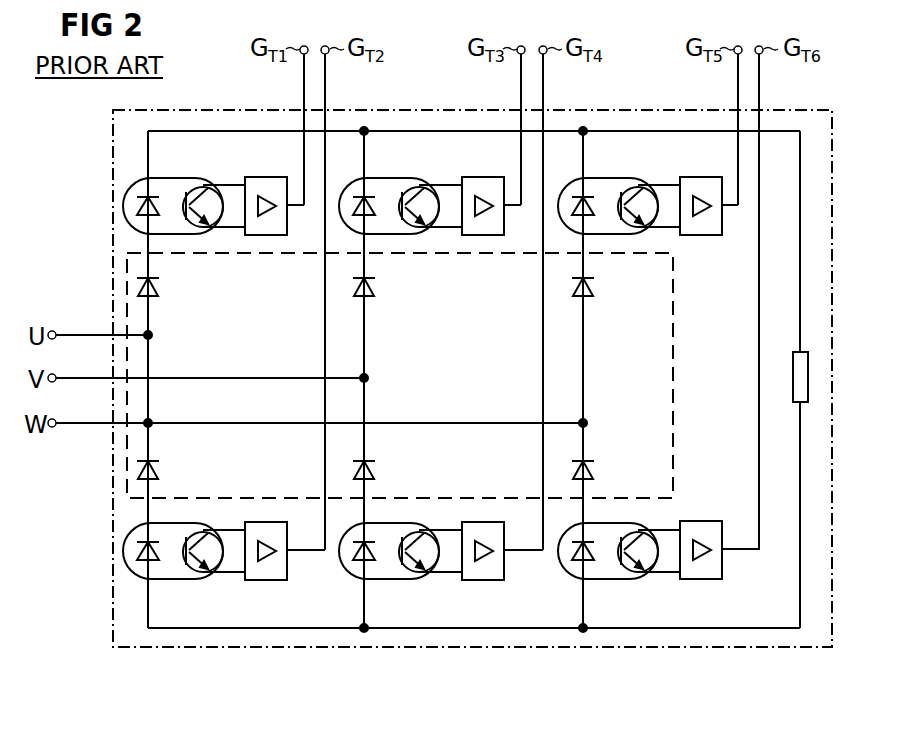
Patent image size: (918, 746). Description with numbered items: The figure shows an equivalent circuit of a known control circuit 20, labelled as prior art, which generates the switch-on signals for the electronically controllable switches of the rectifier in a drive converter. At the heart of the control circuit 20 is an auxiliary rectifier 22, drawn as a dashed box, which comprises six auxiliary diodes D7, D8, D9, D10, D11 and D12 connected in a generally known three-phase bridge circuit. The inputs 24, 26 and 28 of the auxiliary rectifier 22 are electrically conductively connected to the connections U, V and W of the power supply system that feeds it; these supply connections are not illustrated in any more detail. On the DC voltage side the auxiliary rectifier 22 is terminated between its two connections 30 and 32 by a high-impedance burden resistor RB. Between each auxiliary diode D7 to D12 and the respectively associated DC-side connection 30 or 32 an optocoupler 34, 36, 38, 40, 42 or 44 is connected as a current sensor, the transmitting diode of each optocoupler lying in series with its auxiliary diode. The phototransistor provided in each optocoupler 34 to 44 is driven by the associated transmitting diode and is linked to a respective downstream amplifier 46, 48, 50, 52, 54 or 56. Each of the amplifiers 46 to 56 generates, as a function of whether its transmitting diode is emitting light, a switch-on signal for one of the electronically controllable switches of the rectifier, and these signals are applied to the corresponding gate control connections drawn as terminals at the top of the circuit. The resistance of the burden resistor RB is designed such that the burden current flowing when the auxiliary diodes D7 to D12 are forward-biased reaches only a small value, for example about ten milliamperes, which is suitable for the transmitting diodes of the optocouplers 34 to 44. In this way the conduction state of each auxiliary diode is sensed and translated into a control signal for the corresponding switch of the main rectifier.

The control circuit 20 is at (471, 649).
The auxiliary rectifier 22 is at (479, 364).
The input 24 is at (152, 335).
The input 26 is at (368, 378).
The input 28 is at (587, 423).
The connection on the DC voltage side 30 is at (650, 130).
The connection on the DC voltage side 32 is at (720, 630).
The optocoupler 34 is at (170, 178).
The optocoupler 36 is at (166, 580).
The optocoupler 38 is at (386, 178).
The optocoupler 40 is at (382, 580).
The optocoupler 42 is at (605, 178).
The optocoupler 44 is at (601, 580).
The amplifier 46 is at (265, 235).
The amplifier 48 is at (265, 522).
The amplifier 50 is at (482, 235).
The amplifier 52 is at (482, 522).
The amplifier 54 is at (700, 235).
The amplifier 56 is at (700, 521).
The auxiliary diode D7 is at (158, 285).
The auxiliary diode D8 is at (158, 468).
The auxiliary diode D9 is at (374, 285).
The auxiliary diode D10 is at (374, 468).
The auxiliary diode D11 is at (593, 285).
The auxiliary diode D12 is at (593, 468).
The burden resistor RB is at (793, 377).